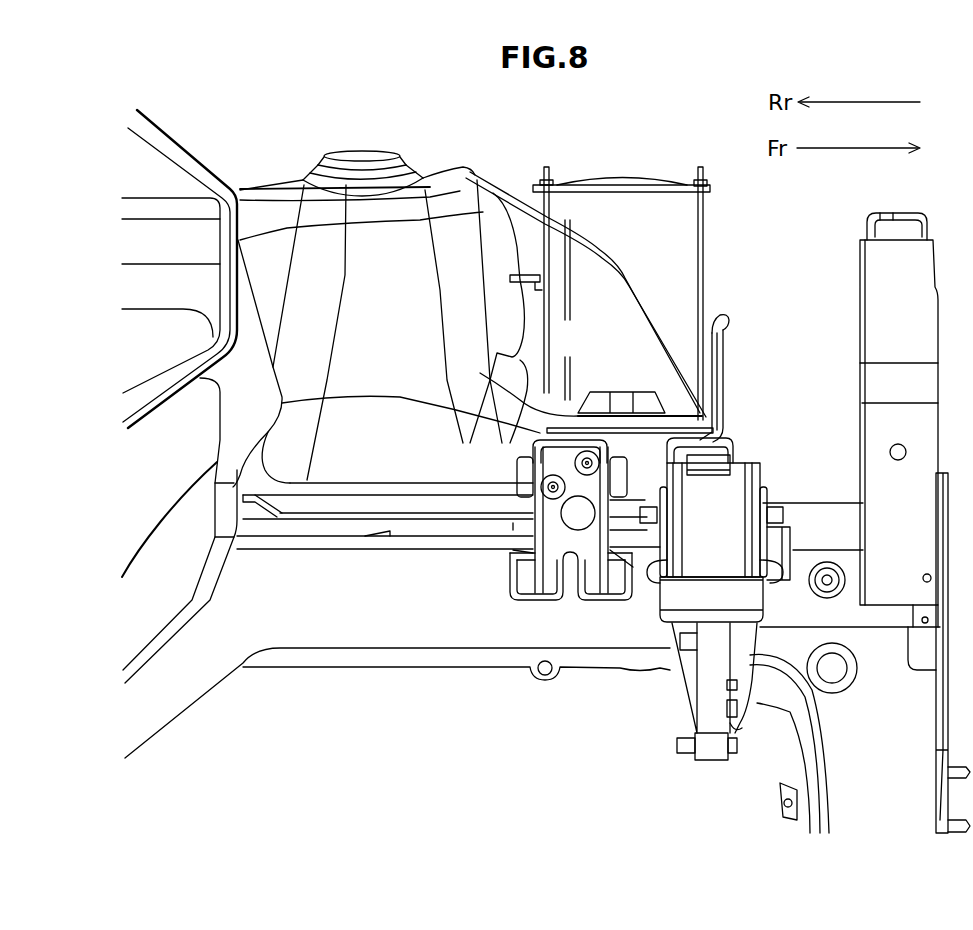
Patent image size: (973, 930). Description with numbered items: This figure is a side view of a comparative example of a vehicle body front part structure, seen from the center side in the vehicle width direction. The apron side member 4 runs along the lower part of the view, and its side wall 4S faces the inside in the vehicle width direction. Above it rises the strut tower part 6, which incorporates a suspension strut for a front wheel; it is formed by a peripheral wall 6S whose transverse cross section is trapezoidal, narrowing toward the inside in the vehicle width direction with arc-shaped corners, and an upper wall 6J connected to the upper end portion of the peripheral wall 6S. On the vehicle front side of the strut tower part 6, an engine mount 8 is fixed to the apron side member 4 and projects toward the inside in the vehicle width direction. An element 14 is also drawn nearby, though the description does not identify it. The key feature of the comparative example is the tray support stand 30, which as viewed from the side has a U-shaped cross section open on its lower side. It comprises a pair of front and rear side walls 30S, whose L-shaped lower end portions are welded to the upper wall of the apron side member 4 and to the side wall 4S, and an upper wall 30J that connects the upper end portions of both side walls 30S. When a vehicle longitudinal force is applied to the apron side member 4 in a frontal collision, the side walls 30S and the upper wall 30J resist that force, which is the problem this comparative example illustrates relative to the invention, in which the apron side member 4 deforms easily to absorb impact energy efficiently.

The apron side member 4 is at (472, 682).
The side wall 4S is at (347, 607).
The strut tower part 6 is at (280, 163).
The upper wall 6J is at (427, 163).
The peripheral wall 6S is at (313, 320).
The engine mount 8 is at (733, 510).
The hook bracket 14 is at (728, 413).
The tray support stand 30 is at (483, 578).
The upper wall 30J is at (577, 418).
The front and rear side walls 30S is at (508, 557).